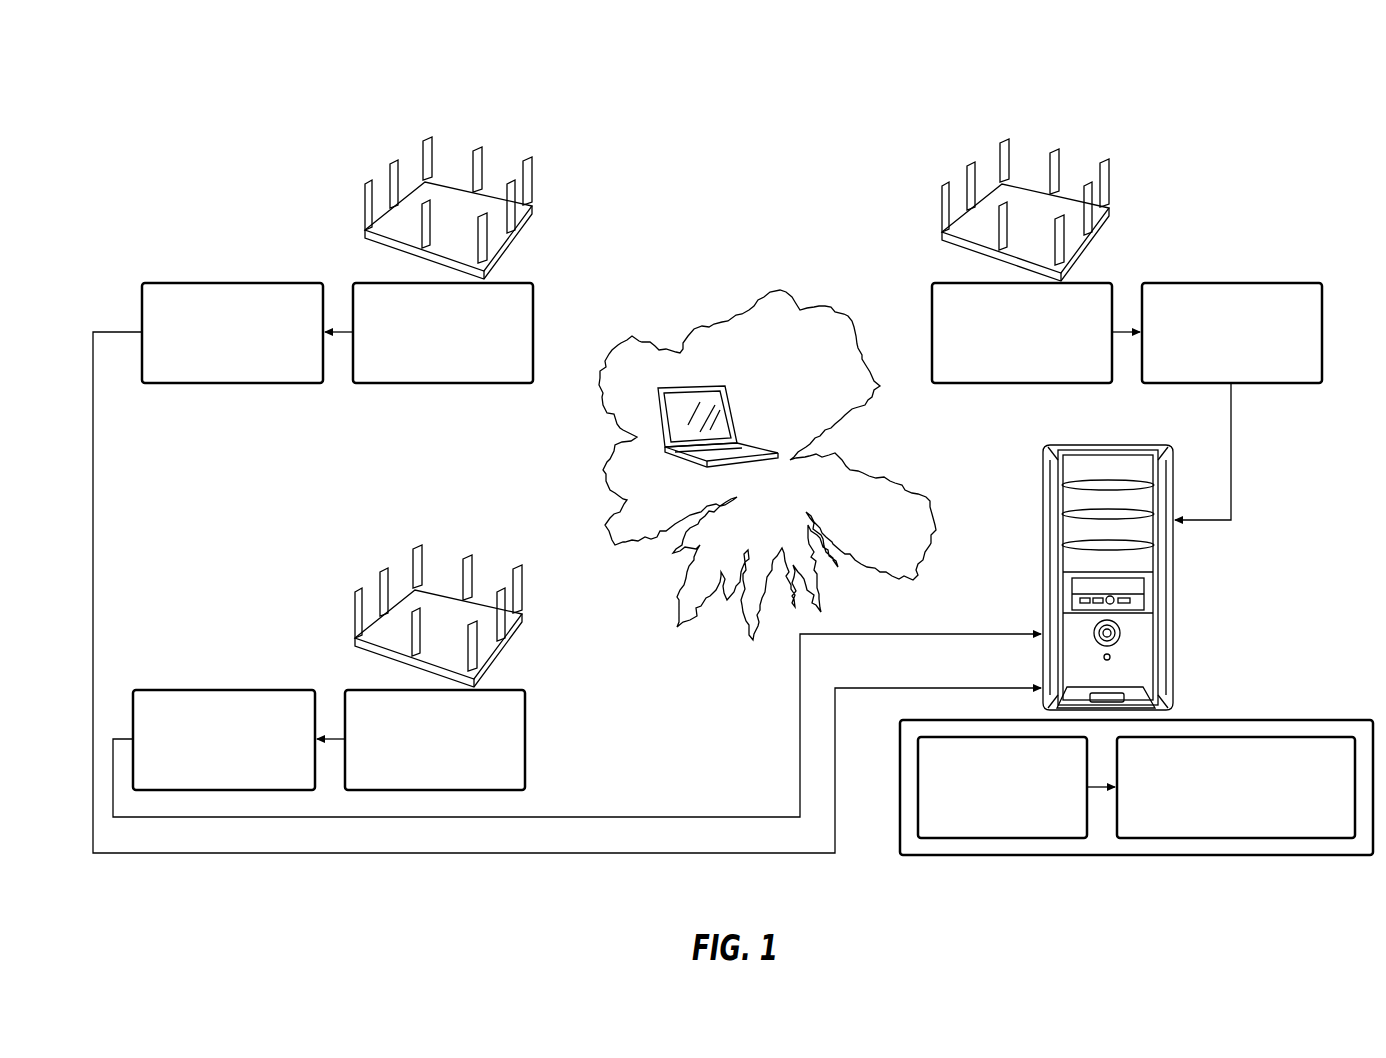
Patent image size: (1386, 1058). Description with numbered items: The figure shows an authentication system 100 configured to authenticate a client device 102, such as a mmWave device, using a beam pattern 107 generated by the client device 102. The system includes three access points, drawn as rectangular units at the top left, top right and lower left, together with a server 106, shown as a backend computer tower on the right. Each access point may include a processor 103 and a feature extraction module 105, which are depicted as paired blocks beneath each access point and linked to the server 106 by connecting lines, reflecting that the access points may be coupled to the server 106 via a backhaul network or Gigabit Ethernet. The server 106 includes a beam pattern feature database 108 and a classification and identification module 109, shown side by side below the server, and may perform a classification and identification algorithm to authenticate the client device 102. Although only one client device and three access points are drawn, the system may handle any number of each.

The authentication system 100 is at (1290, 78).
The client device 102 is at (737, 417).
The processor 103 is at (425, 346).
The feature extraction module 105 is at (214, 346).
The server 106 is at (1173, 592).
The beam pattern 107 is at (770, 293).
The beam pattern feature database 108 is at (984, 801).
The classification and identification module 109 is at (1218, 801).